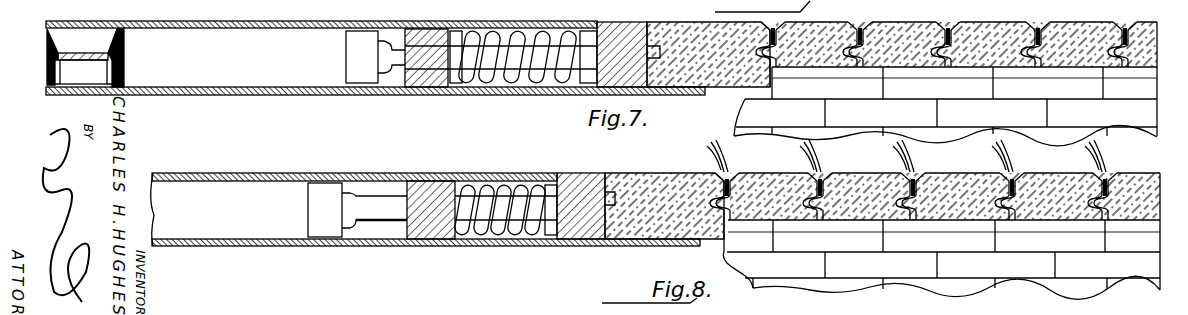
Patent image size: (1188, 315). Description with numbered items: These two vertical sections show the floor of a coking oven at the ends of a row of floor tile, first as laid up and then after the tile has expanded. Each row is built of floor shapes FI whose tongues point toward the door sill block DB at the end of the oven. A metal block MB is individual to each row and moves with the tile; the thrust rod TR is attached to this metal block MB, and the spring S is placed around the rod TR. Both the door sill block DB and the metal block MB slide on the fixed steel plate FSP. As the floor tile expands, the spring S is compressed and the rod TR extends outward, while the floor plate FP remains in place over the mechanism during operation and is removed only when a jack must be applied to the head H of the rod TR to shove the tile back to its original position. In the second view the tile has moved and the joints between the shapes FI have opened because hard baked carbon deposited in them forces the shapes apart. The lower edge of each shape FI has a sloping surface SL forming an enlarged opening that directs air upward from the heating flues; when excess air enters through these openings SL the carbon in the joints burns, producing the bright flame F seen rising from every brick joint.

In FIG. 7, the floor plate FP is at (292, 22).
In FIG. 8, the floor plate FP is at (410, 174).
In FIG. 7, the fixed steel plate FSP is at (319, 91).
In FIG. 8, the fixed steel plate FSP is at (350, 247).
In FIG. 7, the spring S is at (518, 74).
In FIG. 8, the spring S is at (518, 243).
In FIG. 7, the floor shape FI is at (918, 22).
In FIG. 8, the floor shape FI is at (935, 202).
In FIG. 7, the sloping surface SL is at (1040, 67).
In FIG. 8, the sloping surface SL is at (915, 222).
In FIG. 8, the thrust rod TR is at (372, 208).
In FIG. 8, the head H is at (325, 210).
In FIG. 8, the metal block MB is at (586, 197).
In FIG. 8, the door sill block DB is at (664, 196).
In FIG. 8, the flame F is at (1109, 158).